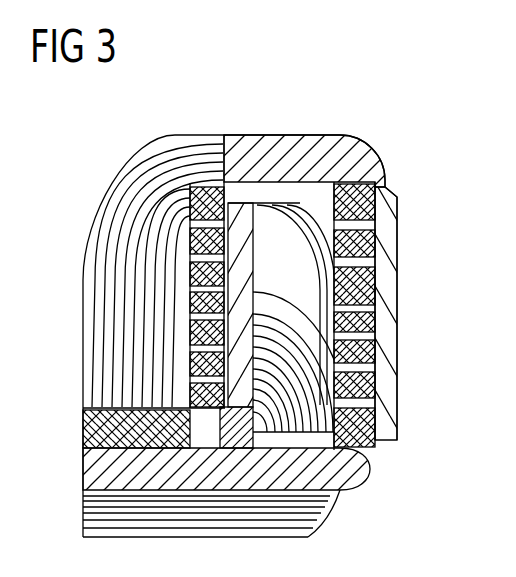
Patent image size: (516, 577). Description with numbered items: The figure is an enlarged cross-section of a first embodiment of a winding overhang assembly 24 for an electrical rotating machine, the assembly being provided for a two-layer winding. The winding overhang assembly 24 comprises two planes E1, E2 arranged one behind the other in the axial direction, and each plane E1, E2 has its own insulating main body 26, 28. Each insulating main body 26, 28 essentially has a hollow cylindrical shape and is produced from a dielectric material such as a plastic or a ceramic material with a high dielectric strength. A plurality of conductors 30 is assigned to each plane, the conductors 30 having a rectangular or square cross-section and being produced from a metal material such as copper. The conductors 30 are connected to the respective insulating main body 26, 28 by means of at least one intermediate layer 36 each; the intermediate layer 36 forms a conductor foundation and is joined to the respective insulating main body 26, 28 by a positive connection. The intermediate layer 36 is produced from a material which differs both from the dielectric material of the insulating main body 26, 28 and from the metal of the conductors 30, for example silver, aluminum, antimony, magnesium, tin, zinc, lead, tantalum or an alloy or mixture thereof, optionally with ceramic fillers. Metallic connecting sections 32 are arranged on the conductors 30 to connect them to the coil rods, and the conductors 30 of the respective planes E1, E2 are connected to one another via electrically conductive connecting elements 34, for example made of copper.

The winding overhang assembly 24 is at (345, 98).
The insulating main body 26 is at (185, 333).
The insulating main body 28 is at (387, 248).
The conductors 30 is at (100, 245).
The metallic connecting sections 32 is at (328, 468).
The connecting elements 34 is at (288, 148).
The intermediate layer 36 is at (185, 382).
The first plane E1 is at (227, 140).
The second plane E2 is at (383, 178).